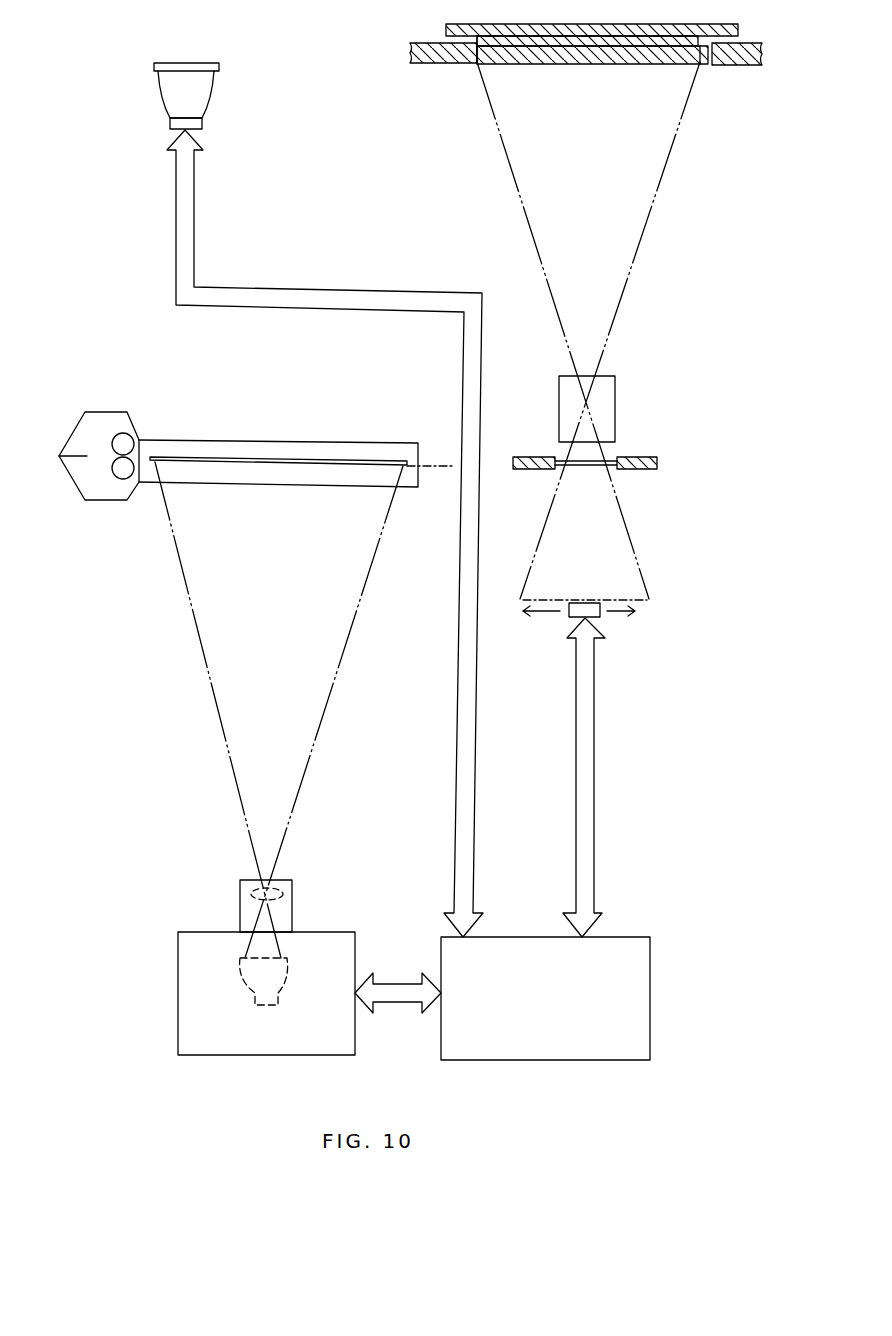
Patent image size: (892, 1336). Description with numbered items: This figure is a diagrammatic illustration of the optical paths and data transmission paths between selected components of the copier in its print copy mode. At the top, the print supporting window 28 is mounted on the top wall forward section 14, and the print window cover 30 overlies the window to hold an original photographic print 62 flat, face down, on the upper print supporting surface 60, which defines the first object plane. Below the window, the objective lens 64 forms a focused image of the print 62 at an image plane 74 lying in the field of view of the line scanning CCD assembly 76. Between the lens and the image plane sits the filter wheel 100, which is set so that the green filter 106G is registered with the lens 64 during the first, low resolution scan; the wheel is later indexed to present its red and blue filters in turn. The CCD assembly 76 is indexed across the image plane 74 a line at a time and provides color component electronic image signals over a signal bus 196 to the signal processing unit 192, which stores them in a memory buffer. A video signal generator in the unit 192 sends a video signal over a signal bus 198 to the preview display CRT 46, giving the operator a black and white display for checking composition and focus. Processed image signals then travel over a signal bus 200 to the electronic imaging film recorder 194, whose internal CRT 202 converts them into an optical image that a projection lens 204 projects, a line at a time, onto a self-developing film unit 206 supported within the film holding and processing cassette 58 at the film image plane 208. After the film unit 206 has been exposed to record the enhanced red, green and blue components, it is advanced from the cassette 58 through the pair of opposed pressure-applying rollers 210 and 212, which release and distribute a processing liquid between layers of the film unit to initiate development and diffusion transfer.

The top wall forward section 14 is at (750, 44).
The print supporting window 28 is at (698, 50).
The print window cover 30 is at (659, 31).
The CRT 46 is at (197, 98).
The film holding and processing cassette 58 is at (84, 410).
The print supporting surface 60 is at (483, 45).
The original photographic print 62 is at (542, 40).
The objective lens 64 is at (615, 406).
The image plane 74 is at (645, 601).
The line scanning CCD assembly 76 is at (601, 614).
The filter wheel 100 is at (652, 458).
The green filter 106G is at (607, 462).
The signal processing unit 192 is at (651, 988).
The electronic imaging film recorder 194 is at (313, 932).
The signal bus 196 is at (594, 800).
The signal bus 198 is at (357, 297).
The signal bus 200 is at (395, 990).
The CRT 202 is at (243, 975).
The projection lens 204 is at (283, 894).
The self-developing film unit 206 is at (343, 462).
The film image plane 208 is at (434, 462).
The pressure-applying roller 210 is at (127, 446).
The pressure-applying roller 212 is at (122, 474).